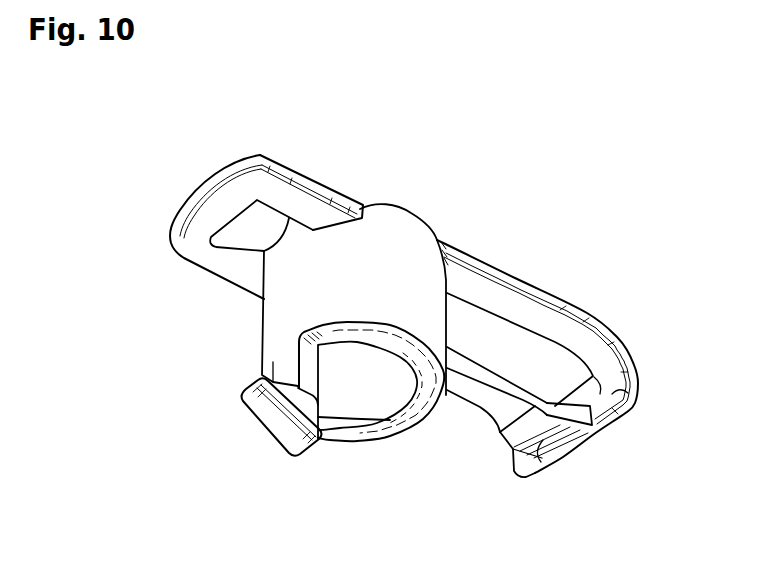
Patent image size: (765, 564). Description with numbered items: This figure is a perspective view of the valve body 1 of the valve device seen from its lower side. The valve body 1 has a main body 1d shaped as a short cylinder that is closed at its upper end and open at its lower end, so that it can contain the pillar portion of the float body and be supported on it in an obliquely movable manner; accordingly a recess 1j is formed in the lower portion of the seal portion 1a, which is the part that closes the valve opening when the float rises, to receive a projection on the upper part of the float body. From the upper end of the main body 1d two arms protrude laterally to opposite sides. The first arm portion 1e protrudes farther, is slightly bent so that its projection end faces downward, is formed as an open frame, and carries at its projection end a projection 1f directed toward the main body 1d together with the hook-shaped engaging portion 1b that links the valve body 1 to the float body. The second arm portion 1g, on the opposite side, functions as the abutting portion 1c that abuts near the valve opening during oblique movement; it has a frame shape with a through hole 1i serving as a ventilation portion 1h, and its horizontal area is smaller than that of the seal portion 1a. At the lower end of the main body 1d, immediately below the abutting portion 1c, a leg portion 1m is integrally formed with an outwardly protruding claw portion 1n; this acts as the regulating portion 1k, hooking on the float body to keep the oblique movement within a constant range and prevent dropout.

The valve body 1 is at (452, 190).
The seal portion 1a is at (387, 206).
The engaging portion 1b is at (538, 463).
The abutting portion 1c is at (197, 196).
The main body 1d is at (268, 313).
The first arm portion 1e is at (530, 287).
The projection 1f is at (553, 438).
The second arm portion 1g is at (285, 177).
The ventilation portion 1h is at (253, 216).
The through hole 1i is at (261, 225).
The recess 1j is at (376, 392).
The regulating portion 1k is at (257, 407).
The leg portion 1m is at (333, 403).
The claw portion 1n is at (282, 417).